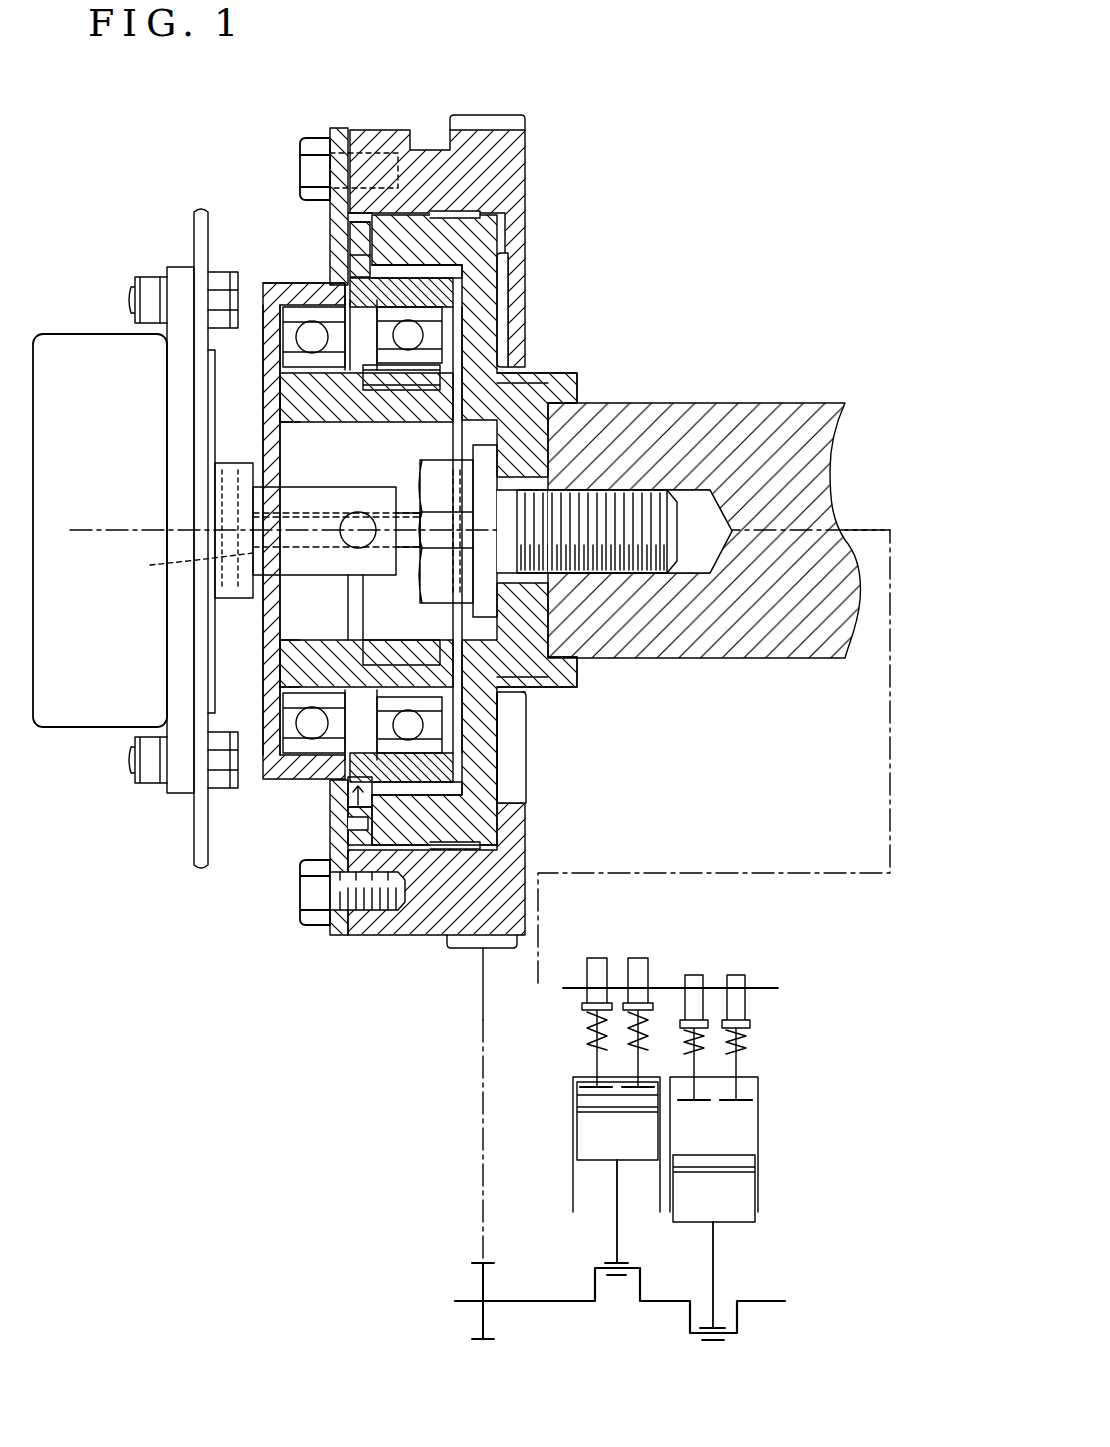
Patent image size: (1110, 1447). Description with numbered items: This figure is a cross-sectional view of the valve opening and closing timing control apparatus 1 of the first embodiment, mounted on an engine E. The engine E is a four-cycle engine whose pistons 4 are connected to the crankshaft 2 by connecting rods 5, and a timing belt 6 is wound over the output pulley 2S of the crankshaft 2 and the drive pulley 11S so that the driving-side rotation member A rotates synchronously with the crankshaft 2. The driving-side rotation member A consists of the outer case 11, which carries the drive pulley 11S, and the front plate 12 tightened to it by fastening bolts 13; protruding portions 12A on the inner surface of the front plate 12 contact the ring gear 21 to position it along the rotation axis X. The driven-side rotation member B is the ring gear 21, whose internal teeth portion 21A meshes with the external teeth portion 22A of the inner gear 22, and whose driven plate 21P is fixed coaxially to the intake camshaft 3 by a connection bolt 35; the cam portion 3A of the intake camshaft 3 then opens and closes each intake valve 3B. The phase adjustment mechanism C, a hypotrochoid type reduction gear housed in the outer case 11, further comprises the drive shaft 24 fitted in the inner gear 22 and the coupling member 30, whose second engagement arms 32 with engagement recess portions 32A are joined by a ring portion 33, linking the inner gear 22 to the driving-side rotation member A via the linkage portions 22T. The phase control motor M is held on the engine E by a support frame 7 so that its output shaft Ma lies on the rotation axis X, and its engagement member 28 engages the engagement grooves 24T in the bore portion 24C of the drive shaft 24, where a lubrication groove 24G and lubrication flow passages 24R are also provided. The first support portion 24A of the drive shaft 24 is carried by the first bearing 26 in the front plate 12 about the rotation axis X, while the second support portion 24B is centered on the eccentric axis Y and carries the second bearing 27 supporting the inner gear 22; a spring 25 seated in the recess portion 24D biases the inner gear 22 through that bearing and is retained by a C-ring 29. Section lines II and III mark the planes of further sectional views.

The valve opening and closing timing control apparatus 1 is at (248, 132).
The crankshaft 2 is at (527, 1301).
The output pulley 2S is at (478, 1285).
The intake camshaft 3 is at (762, 403).
The cam portion 3A is at (638, 958).
The intake valve 3B is at (628, 1090).
The piston 4 is at (595, 1160).
The connecting rod 5 is at (617, 1243).
The timing belt 6 is at (480, 1097).
The support frame 7 is at (196, 852).
The outer case 11 is at (517, 150).
The drive pulley 11S is at (487, 123).
The front plate 12 is at (338, 128).
The protruding portion 12A is at (368, 856).
The fastening bolt 13 is at (302, 172).
The ring gear 21 is at (455, 238).
The internal teeth portion 21A is at (538, 233).
The driven plate 21P is at (548, 440).
The inner gear 22 is at (440, 290).
The external teeth portion 22A is at (440, 780).
The linkage portion 22T is at (340, 290).
The drive shaft 24 is at (278, 400).
The first support portion 24A is at (285, 672).
The second support portion 24B is at (545, 672).
The bore portion 24C is at (300, 425).
The recess portion 24D is at (500, 378).
The lubrication groove 24G is at (285, 645).
The lubrication flow passage 24R is at (352, 650).
The engagement groove 24T is at (175, 530).
The spring 25 is at (403, 392).
The first bearing 26 is at (300, 343).
The second bearing 27 is at (425, 330).
The engagement member 28 is at (352, 517).
The C-ring 29 is at (505, 718).
The coupling member 30 is at (352, 826).
The second engagement arm 32 is at (360, 240).
The engagement recess portion 32A is at (362, 262).
The ring portion 33 is at (355, 772).
The connection bolt 35 is at (672, 553).
The driving-side rotation member A is at (356, 128).
The driven-side rotation member B is at (500, 738).
The phase adjustment mechanism C is at (405, 852).
The engine E is at (795, 167).
The phase control motor M is at (90, 334).
The output shaft Ma is at (358, 487).
The rotation axis X is at (468, 531).
The eccentric axis Y is at (250, 525).
The section line II is at (415, 112).
The section line III is at (387, 90).